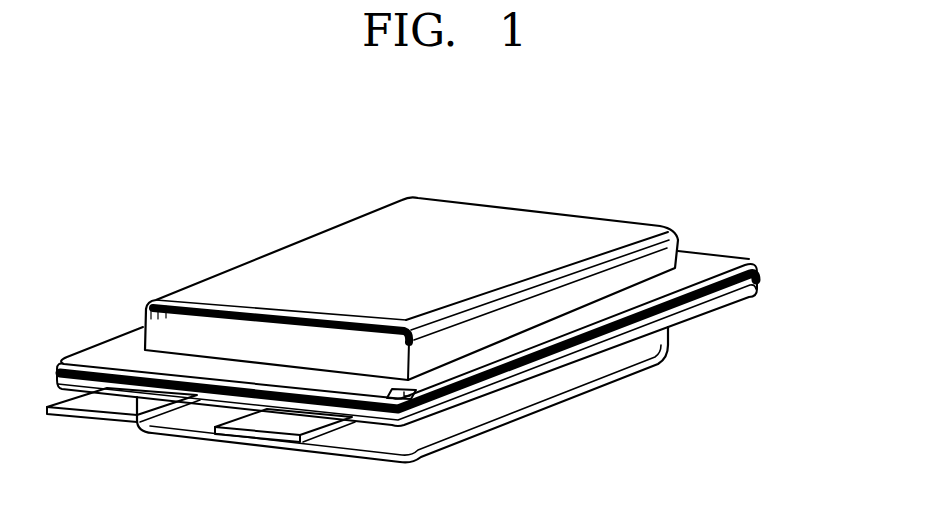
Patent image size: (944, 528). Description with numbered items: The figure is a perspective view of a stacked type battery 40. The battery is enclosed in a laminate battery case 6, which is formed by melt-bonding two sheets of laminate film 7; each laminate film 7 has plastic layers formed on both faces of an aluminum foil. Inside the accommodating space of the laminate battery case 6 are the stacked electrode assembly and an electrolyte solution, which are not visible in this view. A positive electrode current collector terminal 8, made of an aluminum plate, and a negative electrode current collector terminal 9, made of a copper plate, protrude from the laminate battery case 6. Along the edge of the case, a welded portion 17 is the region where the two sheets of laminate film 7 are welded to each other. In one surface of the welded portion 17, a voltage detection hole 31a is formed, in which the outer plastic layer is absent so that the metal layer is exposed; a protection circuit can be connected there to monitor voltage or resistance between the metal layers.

The stacked type battery 40 is at (210, 221).
The laminate battery case 6 is at (708, 266).
The laminate film 7 is at (360, 235).
The welded portion 17 is at (721, 300).
The positive electrode current collector terminal 8 is at (112, 407).
The negative electrode current collector terminal 9 is at (263, 425).
The voltage detection hole 31a is at (413, 396).